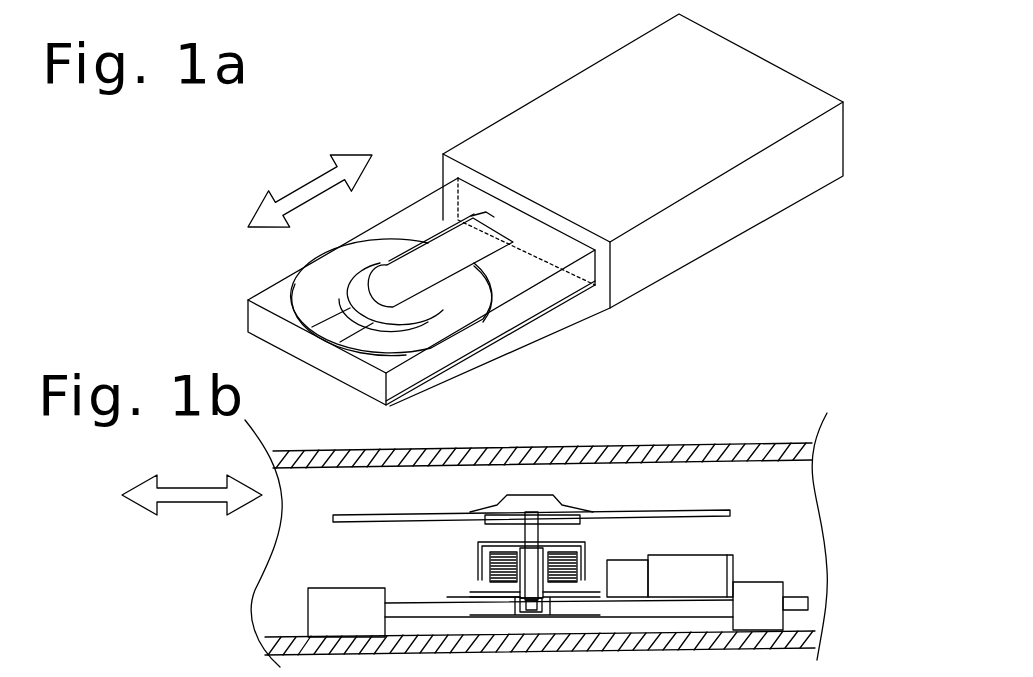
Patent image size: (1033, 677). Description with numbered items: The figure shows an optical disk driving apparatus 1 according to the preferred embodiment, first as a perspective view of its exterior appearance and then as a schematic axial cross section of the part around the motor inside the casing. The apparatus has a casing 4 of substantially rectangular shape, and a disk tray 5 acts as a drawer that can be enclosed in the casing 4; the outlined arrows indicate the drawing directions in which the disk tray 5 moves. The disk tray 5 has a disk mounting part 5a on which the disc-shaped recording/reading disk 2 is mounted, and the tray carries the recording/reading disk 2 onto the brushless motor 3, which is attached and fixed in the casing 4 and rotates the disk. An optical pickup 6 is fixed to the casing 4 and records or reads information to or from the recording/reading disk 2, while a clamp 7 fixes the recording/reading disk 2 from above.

In FIG. 1A, the optical disk driving apparatus 1 is at (273, 133).
In FIG. 1B, the recording/reading disk 2 is at (673, 503).
In FIG. 1B, the brushless motor 3 is at (595, 545).
In FIG. 1A, the casing 4 is at (731, 210).
In FIG. 1A, the disk tray 5 is at (412, 190).
In FIG. 1A, the disk mounting part 5a is at (350, 268).
In FIG. 1B, the optical pickup 6 is at (705, 573).
In FIG. 1B, the clamp 7 is at (535, 497).